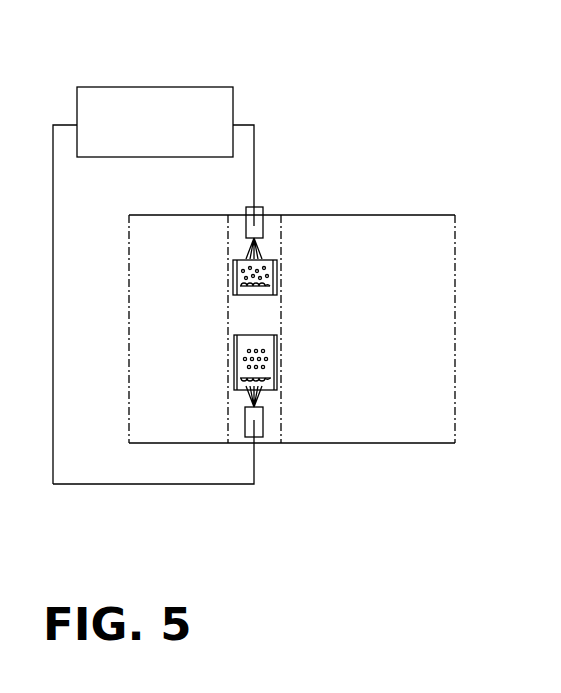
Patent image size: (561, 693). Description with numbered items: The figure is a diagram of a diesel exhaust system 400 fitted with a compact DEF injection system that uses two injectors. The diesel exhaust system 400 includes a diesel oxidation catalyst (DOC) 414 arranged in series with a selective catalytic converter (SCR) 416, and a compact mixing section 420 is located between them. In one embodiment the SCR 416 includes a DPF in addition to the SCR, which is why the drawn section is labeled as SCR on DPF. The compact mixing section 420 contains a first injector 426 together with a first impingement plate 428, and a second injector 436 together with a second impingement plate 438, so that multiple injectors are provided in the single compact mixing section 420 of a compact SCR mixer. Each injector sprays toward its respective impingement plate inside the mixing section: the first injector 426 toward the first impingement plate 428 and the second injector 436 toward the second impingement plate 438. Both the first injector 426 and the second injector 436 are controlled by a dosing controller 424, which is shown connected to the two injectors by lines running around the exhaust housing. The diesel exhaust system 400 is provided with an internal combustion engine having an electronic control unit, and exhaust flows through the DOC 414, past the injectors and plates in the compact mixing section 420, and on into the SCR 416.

The diesel exhaust system 400 is at (170, 506).
The diesel oxidation catalyst 414 is at (190, 215).
The selective catalytic converter 416 is at (417, 215).
The compact mixing section 420 is at (272, 444).
The dosing controller 424 is at (190, 87).
The first injector 426 is at (268, 208).
The first impingement plate 428 is at (280, 270).
The second injector 436 is at (262, 422).
The second impingement plate 438 is at (272, 372).